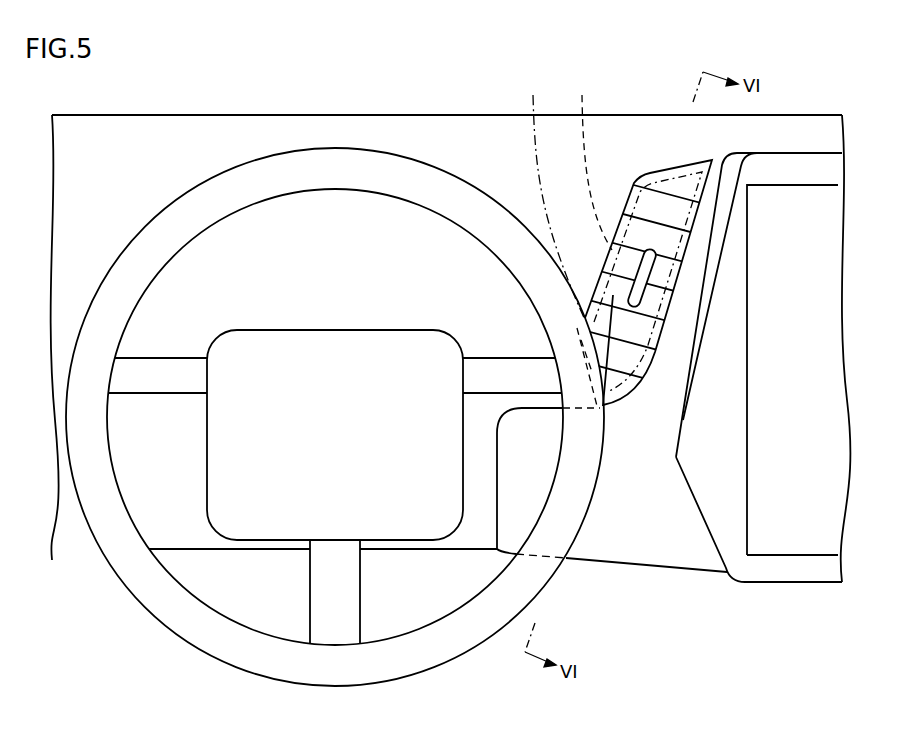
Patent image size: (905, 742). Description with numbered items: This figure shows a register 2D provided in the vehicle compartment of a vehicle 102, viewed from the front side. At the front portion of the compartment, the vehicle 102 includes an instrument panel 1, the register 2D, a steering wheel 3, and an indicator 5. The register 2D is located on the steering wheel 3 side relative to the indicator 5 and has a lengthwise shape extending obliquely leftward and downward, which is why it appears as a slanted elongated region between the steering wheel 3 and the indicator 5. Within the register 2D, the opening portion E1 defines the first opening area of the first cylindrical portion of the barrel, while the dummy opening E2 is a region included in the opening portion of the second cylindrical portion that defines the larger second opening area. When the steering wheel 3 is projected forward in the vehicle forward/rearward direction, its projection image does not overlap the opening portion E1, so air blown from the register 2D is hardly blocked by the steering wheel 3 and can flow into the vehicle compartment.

The vehicle 102 is at (250, 109).
The instrument panel 1 is at (335, 379).
The steering wheel 3 is at (338, 170).
The register 2D is at (644, 175).
The opening portion E1 is at (591, 161).
The dummy opening E2 is at (551, 196).
The indicator 5 is at (815, 250).